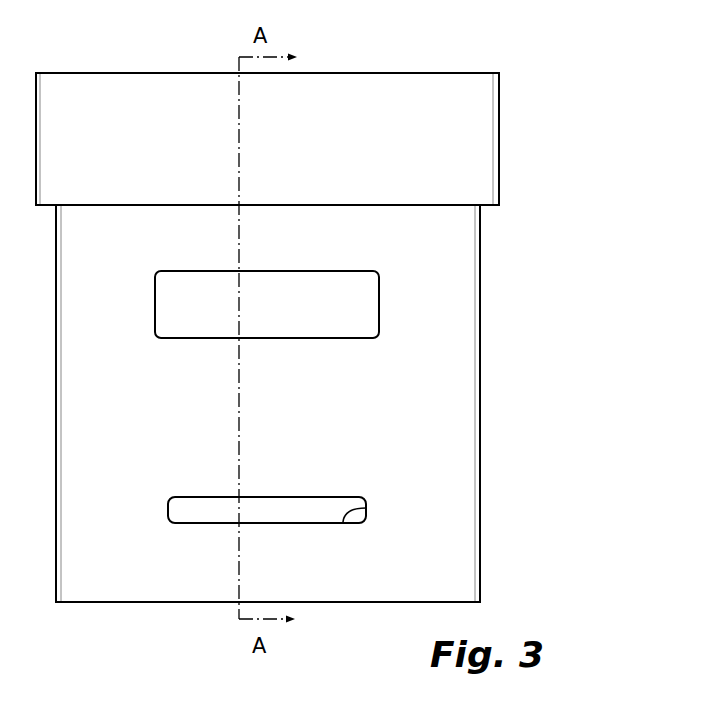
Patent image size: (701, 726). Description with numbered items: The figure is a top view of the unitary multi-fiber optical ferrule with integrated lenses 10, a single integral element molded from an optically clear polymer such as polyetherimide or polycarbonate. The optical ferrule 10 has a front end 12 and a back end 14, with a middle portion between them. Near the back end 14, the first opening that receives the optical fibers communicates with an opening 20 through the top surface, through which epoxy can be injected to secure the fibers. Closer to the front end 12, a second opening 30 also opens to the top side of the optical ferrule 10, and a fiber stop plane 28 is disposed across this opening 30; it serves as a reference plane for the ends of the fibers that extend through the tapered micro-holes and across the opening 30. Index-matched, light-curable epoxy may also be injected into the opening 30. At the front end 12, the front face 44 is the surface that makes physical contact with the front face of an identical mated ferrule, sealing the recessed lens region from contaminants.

The unitary multi-fiber optical ferrule with integrated lenses 10 is at (567, 164).
The front end 12 is at (139, 607).
The back end 14 is at (465, 70).
The opening 20 is at (366, 291).
The fiber stop plane 28 is at (363, 508).
The opening 30 is at (332, 501).
The front face 44 is at (460, 603).